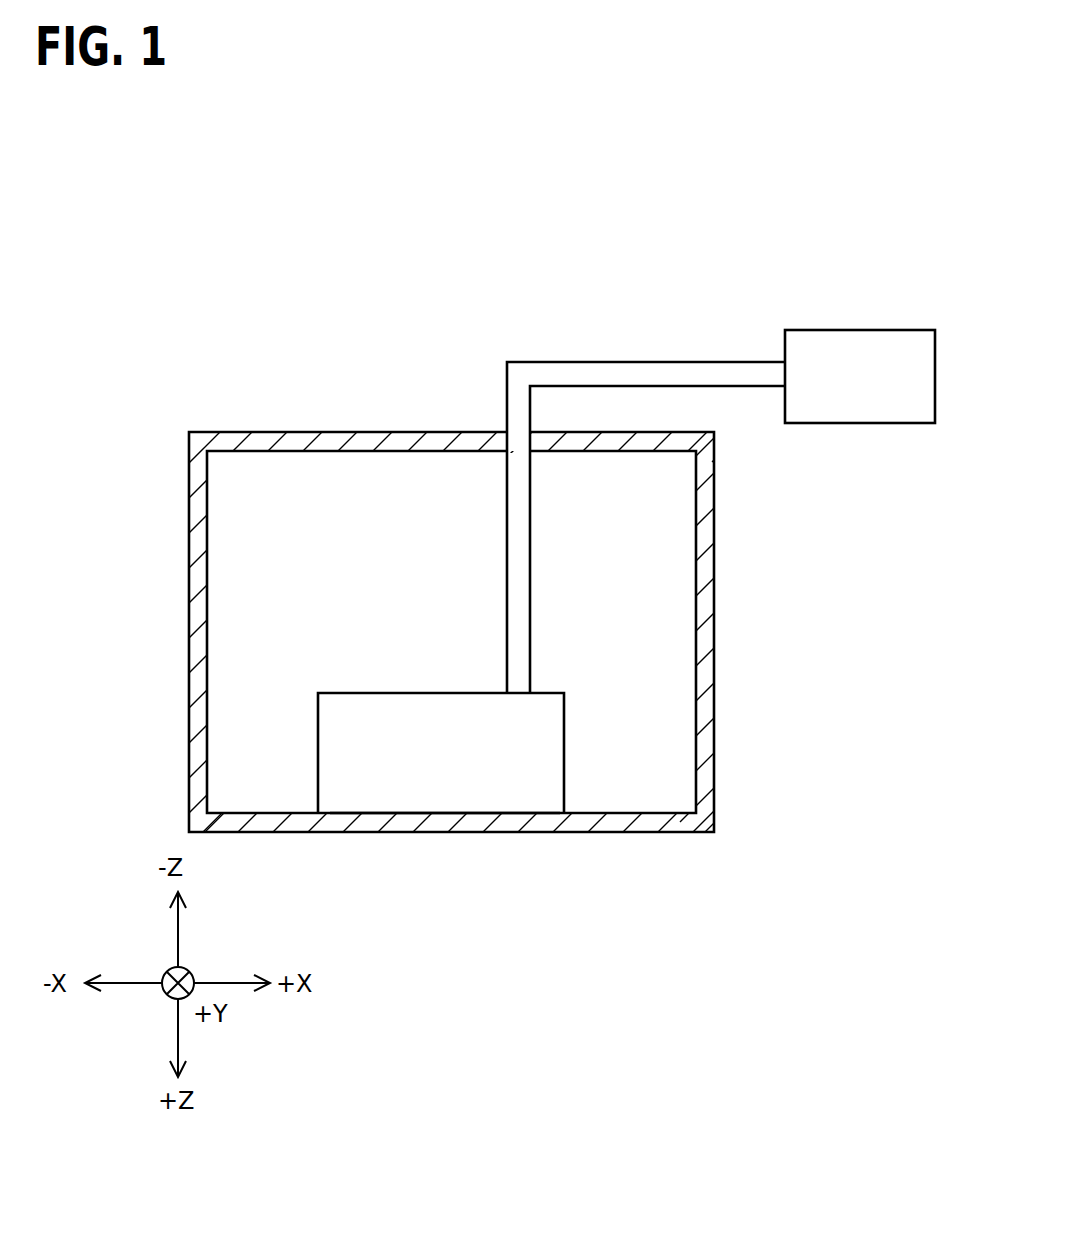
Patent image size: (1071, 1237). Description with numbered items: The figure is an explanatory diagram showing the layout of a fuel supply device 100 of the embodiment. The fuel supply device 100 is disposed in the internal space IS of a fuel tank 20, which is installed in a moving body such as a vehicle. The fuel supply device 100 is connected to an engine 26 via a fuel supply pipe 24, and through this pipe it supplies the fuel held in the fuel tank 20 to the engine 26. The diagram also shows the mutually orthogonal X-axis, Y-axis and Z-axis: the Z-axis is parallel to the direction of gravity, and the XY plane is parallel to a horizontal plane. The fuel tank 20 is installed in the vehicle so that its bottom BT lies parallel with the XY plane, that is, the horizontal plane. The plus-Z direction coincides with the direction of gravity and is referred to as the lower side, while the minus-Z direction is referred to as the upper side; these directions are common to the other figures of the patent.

The fuel tank 20 is at (714, 693).
The fuel supply pipe 24 is at (643, 361).
The engine 26 is at (858, 330).
The fuel supply device 100 is at (318, 776).
The internal space IS is at (290, 499).
The bottom BT is at (612, 813).